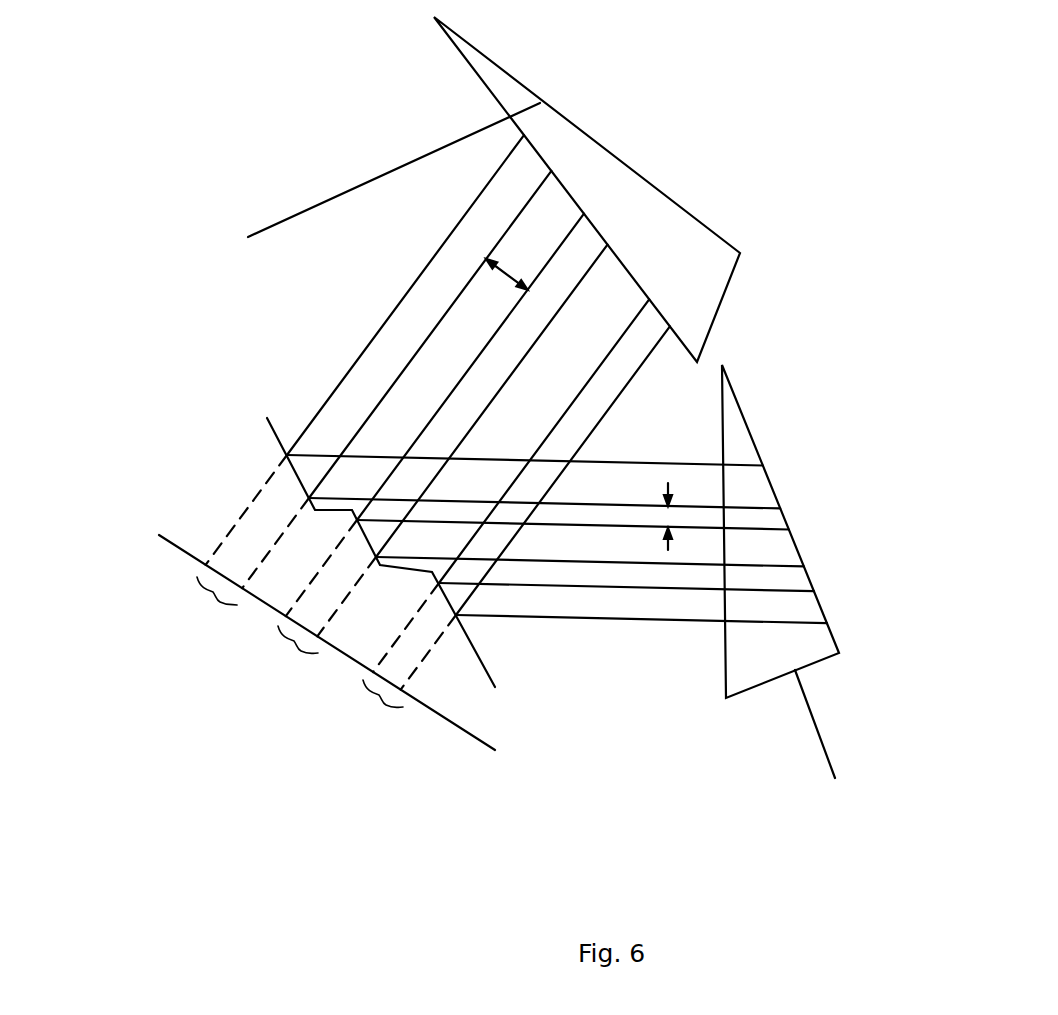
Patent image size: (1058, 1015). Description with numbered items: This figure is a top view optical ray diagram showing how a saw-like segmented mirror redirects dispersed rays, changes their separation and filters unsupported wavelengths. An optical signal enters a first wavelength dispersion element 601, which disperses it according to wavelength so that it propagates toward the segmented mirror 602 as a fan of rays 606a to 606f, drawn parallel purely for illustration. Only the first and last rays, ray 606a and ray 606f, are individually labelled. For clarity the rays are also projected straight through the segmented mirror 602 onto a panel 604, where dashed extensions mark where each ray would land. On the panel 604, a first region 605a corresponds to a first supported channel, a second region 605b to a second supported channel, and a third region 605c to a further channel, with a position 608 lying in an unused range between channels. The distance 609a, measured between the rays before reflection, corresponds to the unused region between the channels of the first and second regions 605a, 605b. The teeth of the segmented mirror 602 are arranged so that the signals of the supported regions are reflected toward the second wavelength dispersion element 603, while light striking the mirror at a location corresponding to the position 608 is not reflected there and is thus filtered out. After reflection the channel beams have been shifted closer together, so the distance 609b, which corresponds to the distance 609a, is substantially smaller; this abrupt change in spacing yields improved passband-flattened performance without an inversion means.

The first wavelength dispersion element 601 is at (511, 86).
The segmented mirror 602 is at (275, 438).
The second wavelength dispersion element 603 is at (765, 476).
The panel 604 is at (172, 546).
The first region 605a is at (194, 604).
The second region 605b is at (282, 655).
The third region 605c is at (366, 710).
The ray 606a is at (480, 600).
The ray 606f is at (362, 357).
The position 608 is at (259, 608).
The distance 609a is at (503, 272).
The distance 609b is at (667, 516).